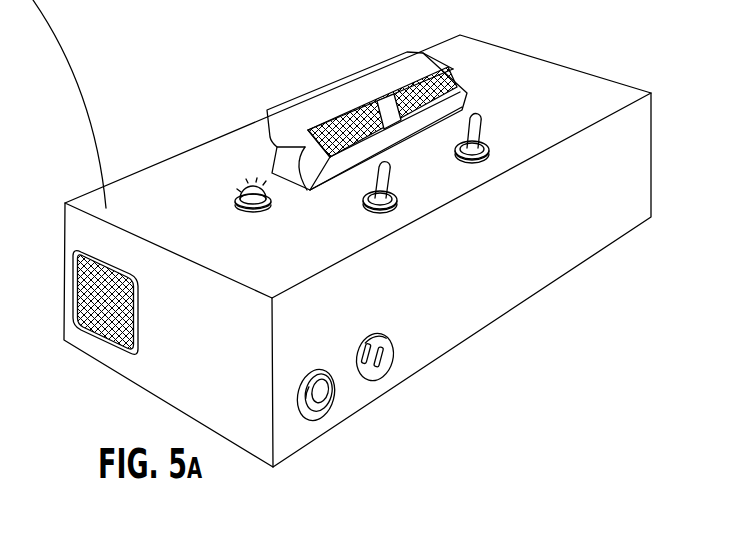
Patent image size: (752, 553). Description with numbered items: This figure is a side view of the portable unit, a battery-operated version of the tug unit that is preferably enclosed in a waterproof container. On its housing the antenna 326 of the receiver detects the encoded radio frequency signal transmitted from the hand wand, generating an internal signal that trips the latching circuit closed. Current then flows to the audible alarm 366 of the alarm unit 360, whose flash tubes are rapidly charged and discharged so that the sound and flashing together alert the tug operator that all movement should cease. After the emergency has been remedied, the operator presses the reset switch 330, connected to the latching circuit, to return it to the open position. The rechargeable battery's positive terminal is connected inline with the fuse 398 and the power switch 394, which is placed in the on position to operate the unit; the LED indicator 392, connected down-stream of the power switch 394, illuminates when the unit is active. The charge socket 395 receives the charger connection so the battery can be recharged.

The antenna 326 is at (66, 33).
The alarm unit 360 is at (360, 85).
The reset switch 330 is at (480, 126).
The power switch 394 is at (377, 199).
The LED indicator 392 is at (258, 212).
The audible alarm 366 is at (117, 307).
The charge socket 395 is at (389, 363).
The fuse 398 is at (318, 418).